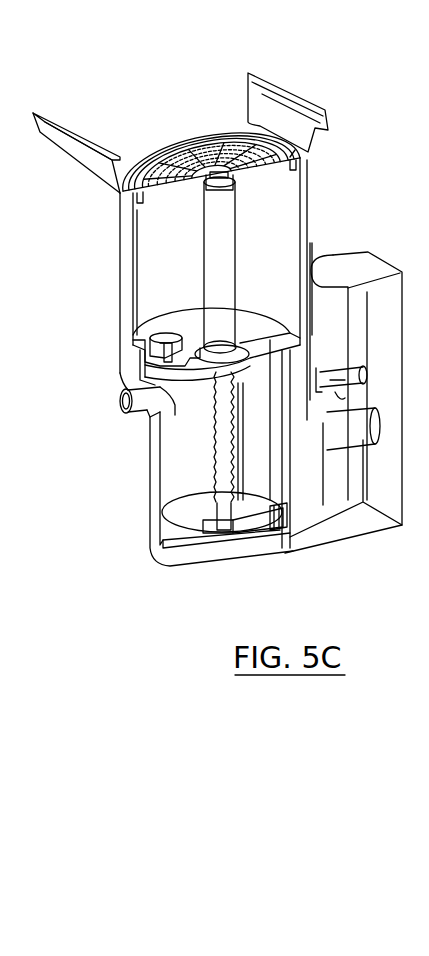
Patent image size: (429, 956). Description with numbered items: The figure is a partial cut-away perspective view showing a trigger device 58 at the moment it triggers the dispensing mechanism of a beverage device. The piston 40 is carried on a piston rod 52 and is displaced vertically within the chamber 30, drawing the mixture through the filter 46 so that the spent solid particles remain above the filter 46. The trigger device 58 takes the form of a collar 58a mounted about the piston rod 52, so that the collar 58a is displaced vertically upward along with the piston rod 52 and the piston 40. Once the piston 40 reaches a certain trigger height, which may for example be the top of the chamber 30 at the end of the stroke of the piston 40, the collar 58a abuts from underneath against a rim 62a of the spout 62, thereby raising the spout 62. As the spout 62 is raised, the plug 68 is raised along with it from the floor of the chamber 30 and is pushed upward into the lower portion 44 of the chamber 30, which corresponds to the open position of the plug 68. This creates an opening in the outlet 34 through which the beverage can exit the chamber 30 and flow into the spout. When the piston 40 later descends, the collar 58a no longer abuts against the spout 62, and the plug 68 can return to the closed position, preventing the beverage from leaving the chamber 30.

The chamber 30 is at (306, 197).
The piston 40 is at (139, 155).
The filter 46 is at (232, 150).
The lower portion 44 is at (182, 262).
The piston rod 52 is at (234, 268).
The trigger device 58 is at (240, 478).
The collar 58a is at (260, 518).
The plug 68 is at (160, 333).
The outlet 34 is at (148, 355).
The spout 62 is at (122, 405).
The rim 62a is at (163, 387).